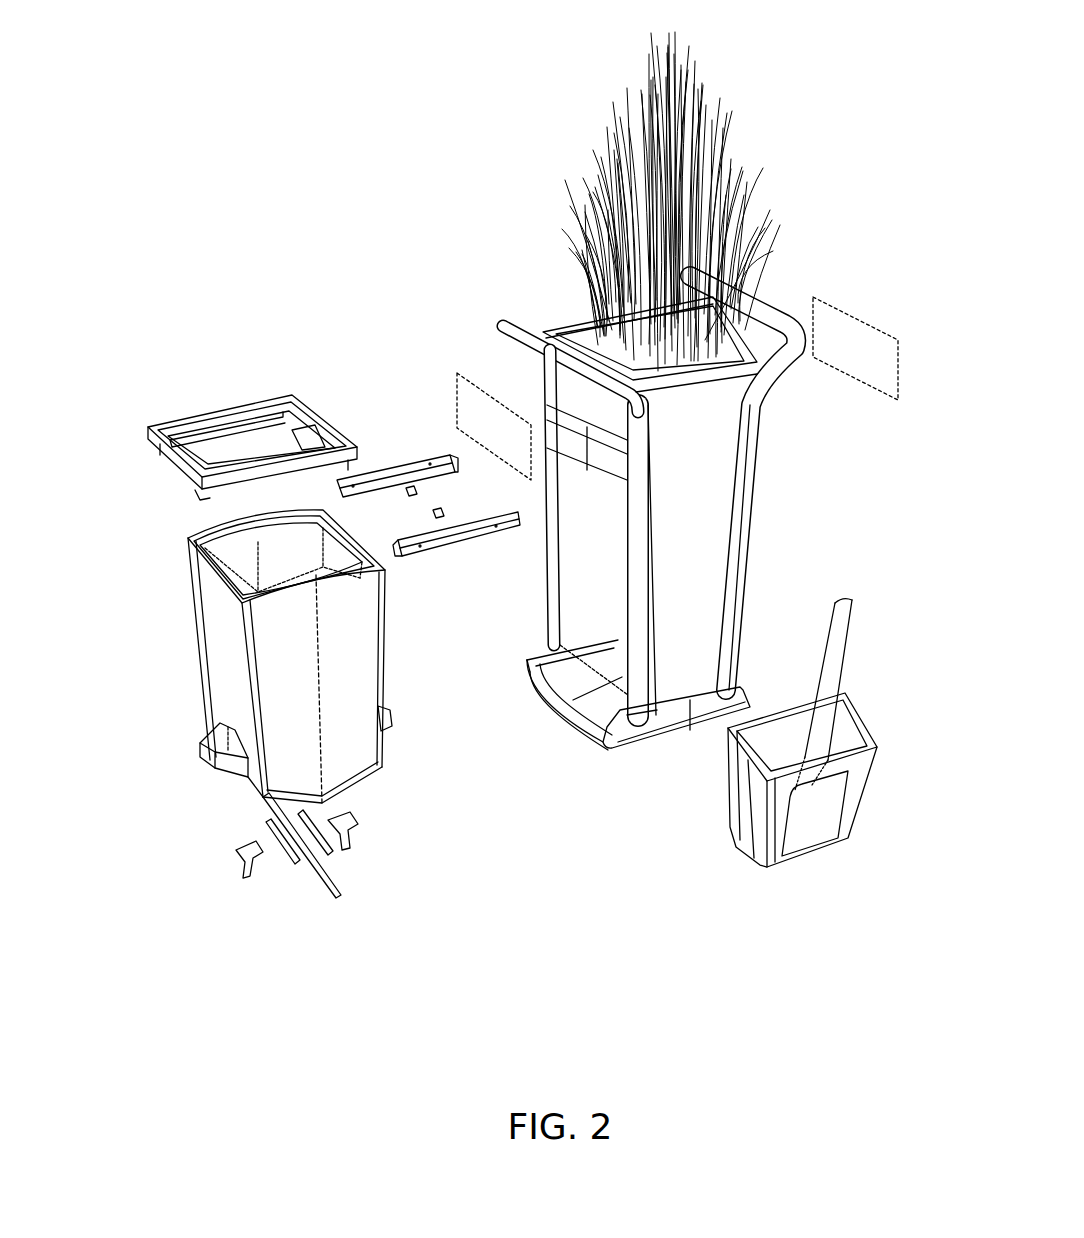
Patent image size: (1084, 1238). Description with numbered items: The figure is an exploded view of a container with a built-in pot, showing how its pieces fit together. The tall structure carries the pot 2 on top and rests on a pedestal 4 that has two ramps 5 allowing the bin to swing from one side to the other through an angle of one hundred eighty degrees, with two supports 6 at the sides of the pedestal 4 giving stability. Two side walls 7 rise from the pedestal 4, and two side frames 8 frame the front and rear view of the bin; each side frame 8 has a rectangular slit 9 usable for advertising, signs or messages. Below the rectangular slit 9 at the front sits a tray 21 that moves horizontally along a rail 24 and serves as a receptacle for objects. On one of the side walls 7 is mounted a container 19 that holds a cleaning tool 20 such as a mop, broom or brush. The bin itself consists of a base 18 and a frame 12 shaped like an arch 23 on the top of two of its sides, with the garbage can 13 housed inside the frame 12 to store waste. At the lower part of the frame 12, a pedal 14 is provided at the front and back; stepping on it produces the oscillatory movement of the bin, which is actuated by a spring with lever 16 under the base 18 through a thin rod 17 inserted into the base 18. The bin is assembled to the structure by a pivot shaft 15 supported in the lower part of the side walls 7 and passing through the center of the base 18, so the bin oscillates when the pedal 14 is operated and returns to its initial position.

The pot 2 is at (688, 148).
The pedestal 4 is at (575, 728).
The ramps 5 is at (578, 683).
The supports 6 is at (665, 733).
The side walls 7 is at (713, 428).
The side frames 8 is at (514, 312).
The rectangular slit 9 is at (557, 395).
The frame 12 is at (190, 600).
The garbage can 13 is at (238, 562).
The pedal 14 is at (208, 742).
The pivot shaft 15 is at (330, 897).
The spring with lever 16 is at (233, 855).
The thin rod 17 is at (290, 855).
The base 18 is at (353, 780).
The container 19 is at (787, 838).
The cleaning tool 20 is at (843, 633).
The tray 21 is at (247, 400).
The arch 23 is at (247, 505).
The rail 24 is at (403, 457).